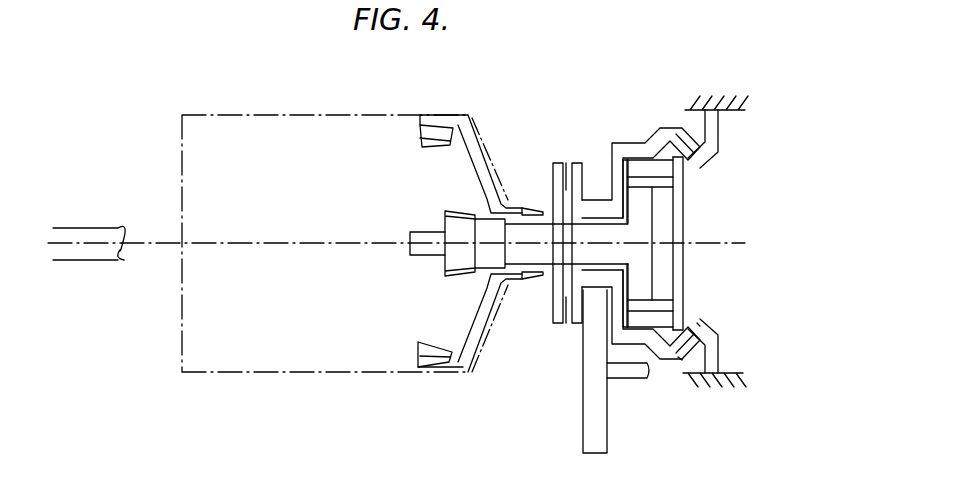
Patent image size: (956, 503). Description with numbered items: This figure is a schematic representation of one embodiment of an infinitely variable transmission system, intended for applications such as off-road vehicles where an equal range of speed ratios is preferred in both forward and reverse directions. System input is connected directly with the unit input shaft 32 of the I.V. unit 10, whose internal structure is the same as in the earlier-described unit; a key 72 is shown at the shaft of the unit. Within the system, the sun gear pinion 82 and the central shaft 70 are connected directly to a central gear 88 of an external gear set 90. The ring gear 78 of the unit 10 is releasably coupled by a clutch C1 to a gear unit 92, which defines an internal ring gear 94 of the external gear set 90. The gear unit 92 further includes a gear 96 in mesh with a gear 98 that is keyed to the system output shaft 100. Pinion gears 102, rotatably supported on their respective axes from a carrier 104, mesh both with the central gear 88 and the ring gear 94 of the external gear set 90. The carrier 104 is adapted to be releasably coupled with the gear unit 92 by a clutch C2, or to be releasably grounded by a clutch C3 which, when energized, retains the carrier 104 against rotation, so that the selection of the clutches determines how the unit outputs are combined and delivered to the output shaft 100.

The I.V. unit 10 is at (303, 115).
The unit input shaft 32 is at (121, 232).
The central shaft 70 is at (553, 247).
The key 72 is at (516, 205).
The ring gear 78 is at (434, 148).
The sun gear pinion 82 is at (441, 263).
The central gear 88 is at (643, 212).
The external gear set 90 is at (621, 118).
The gear unit 92 is at (640, 143).
The internal ring gear 94 is at (645, 163).
The gear 96 is at (593, 203).
The gear 98 is at (598, 437).
The system output shaft 100 is at (617, 373).
The pinion gears 102 is at (638, 295).
The carrier 104 is at (678, 273).
The clutch C1 is at (567, 163).
The clutch C2 is at (678, 355).
The clutch C3 is at (694, 323).